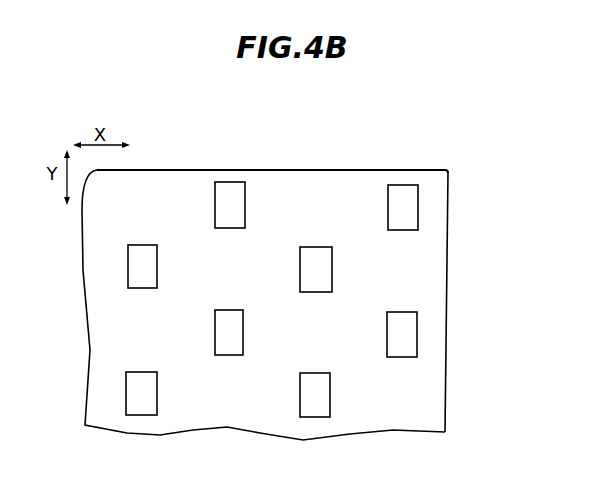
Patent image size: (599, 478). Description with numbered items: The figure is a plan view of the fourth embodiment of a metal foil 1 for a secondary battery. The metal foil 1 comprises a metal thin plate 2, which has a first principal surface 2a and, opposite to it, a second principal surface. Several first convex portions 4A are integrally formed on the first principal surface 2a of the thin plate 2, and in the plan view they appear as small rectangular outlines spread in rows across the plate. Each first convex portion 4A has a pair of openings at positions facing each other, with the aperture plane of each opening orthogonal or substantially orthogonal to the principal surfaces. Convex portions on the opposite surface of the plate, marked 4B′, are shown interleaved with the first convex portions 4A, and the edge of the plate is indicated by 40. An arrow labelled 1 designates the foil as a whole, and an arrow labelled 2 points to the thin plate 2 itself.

The metal foil 1 is at (503, 153).
The metal thin plate 2 is at (453, 213).
The first principal surface 2a is at (153, 175).
The side edge of substrate 40 is at (418, 215).
The first convex portion 4A is at (238, 187).
The second openings 4B′ is at (140, 267).